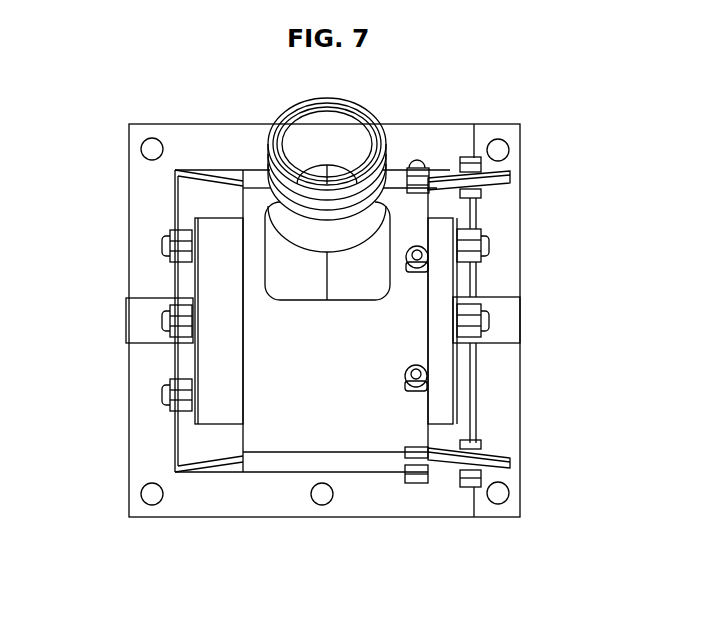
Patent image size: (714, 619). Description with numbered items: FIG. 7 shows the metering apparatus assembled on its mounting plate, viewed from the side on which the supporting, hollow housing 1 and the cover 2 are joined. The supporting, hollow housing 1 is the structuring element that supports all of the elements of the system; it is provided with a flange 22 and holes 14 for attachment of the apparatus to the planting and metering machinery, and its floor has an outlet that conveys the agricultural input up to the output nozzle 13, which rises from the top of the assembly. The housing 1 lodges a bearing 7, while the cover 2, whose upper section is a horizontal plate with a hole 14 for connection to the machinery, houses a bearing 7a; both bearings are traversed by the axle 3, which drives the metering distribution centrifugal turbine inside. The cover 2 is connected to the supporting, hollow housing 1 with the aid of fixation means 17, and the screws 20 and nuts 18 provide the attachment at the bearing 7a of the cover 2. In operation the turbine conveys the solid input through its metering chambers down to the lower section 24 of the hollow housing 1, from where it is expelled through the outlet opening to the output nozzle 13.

The supporting, hollow housing 1 is at (351, 427).
The cover 2 is at (502, 429).
The axle 3 is at (140, 310).
The bearing 7 is at (218, 408).
The bearing 7a is at (441, 358).
The output nozzle 13 is at (352, 223).
The holes 14 is at (145, 156).
The fixation means 17 is at (512, 467).
The nuts 18 is at (165, 391).
The screws 20 is at (178, 393).
The flange 22 is at (143, 255).
The lower section 24 is at (298, 432).